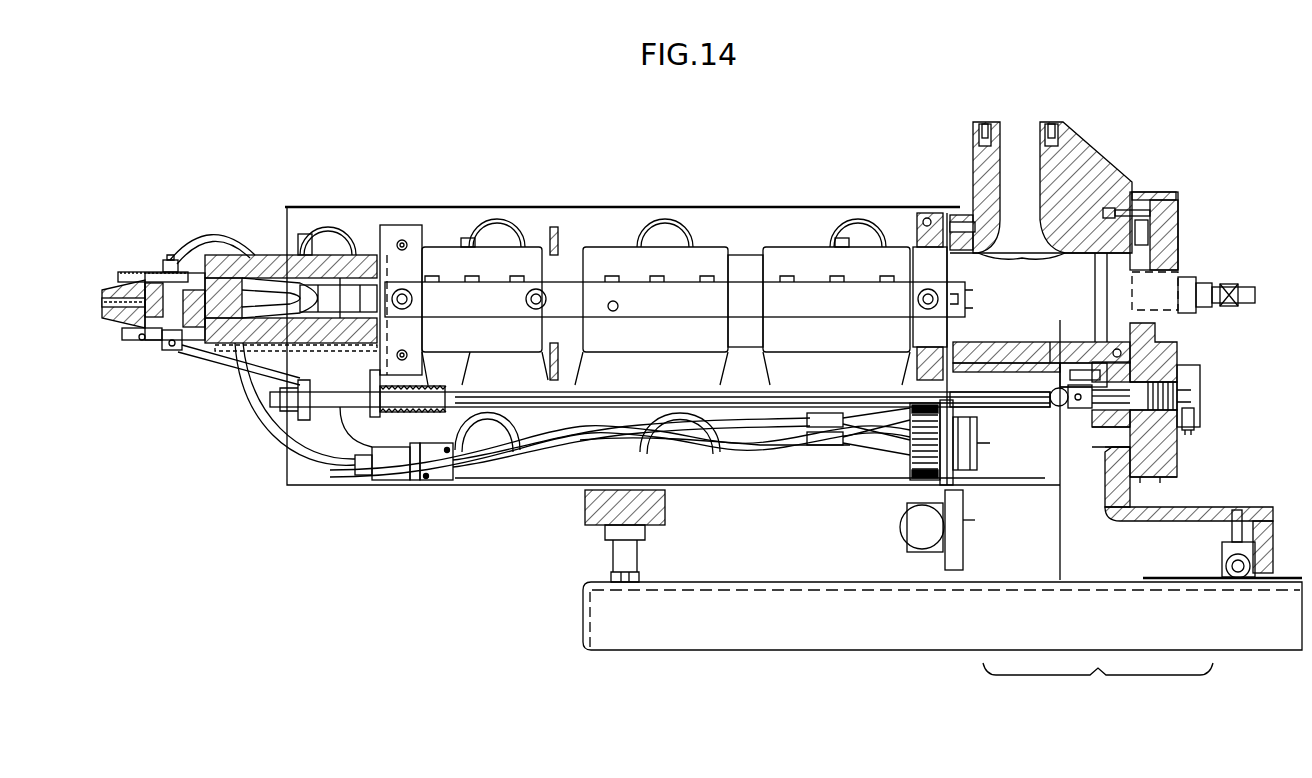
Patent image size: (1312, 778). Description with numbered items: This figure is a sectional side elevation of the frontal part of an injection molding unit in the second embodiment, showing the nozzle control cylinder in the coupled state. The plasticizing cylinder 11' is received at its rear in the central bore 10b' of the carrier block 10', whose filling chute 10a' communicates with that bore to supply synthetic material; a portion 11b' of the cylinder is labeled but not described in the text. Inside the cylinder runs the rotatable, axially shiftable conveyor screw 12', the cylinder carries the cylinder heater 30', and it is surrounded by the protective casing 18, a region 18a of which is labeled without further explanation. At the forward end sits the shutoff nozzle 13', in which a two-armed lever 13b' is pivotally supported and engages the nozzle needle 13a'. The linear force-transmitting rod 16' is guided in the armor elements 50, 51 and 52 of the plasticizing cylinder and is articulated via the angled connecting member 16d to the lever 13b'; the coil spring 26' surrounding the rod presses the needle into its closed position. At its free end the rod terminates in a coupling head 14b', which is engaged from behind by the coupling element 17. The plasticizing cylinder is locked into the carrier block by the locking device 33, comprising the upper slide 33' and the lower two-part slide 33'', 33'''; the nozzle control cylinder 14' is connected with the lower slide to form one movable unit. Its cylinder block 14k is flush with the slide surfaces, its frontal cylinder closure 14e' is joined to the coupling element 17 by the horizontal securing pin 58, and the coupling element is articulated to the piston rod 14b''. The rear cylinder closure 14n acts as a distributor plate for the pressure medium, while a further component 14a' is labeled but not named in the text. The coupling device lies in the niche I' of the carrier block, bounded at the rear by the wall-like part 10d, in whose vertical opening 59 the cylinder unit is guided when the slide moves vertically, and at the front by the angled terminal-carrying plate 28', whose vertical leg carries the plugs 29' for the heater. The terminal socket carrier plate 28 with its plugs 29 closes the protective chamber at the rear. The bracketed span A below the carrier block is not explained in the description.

The shutoff nozzle 13' is at (239, 266).
The nozzle needle 13a' is at (210, 222).
The two-armed lever 13b' is at (231, 367).
The angled connecting member 16d is at (222, 372).
The armor element 50 is at (398, 258).
The armor element 51 is at (552, 268).
The cylinder heater 30' is at (666, 265).
The plasticizing cylinder 11' is at (675, 235).
The support bar end 11b' is at (994, 281).
The protective casing 18 is at (803, 203).
The armor element 52 is at (918, 214).
The filling chute 10a' is at (1008, 164).
The carrier block 10' is at (1047, 227).
The central bore 10b' is at (1021, 237).
The locking device 33 is at (1144, 195).
The slide 33' is at (1198, 258).
The conveyor screw 12' is at (1238, 275).
The coupling element 17 is at (1050, 366).
The horizontal securing pin 58 is at (1078, 372).
The frontal cylinder closure 14e' is at (1085, 335).
The coupling head 14b' is at (1000, 359).
The nozzle control cylinder 14' is at (1066, 404).
The niche I' is at (1066, 428).
The piston rod 14b'' is at (1071, 445).
The lower slide component 33'' is at (1198, 400).
The lower slide component 33''' is at (1200, 463).
The rear cylinder closure 14n is at (1200, 377).
The rod end 14a' is at (1223, 398).
The cylinder block 14k is at (1199, 417).
The vertically extending opening 59 is at (1113, 440).
The wall-like part 10d is at (1107, 490).
The force-transmitting rod 16' is at (660, 385).
The spring 26' is at (398, 481).
The hose plate 18a is at (810, 470).
The plugs 29 is at (893, 480).
The plugs 29' is at (990, 471).
The terminal socket carrier plate 28 is at (922, 561).
The angled terminal-carrying plate 28' is at (972, 529).
The region A is at (1098, 687).